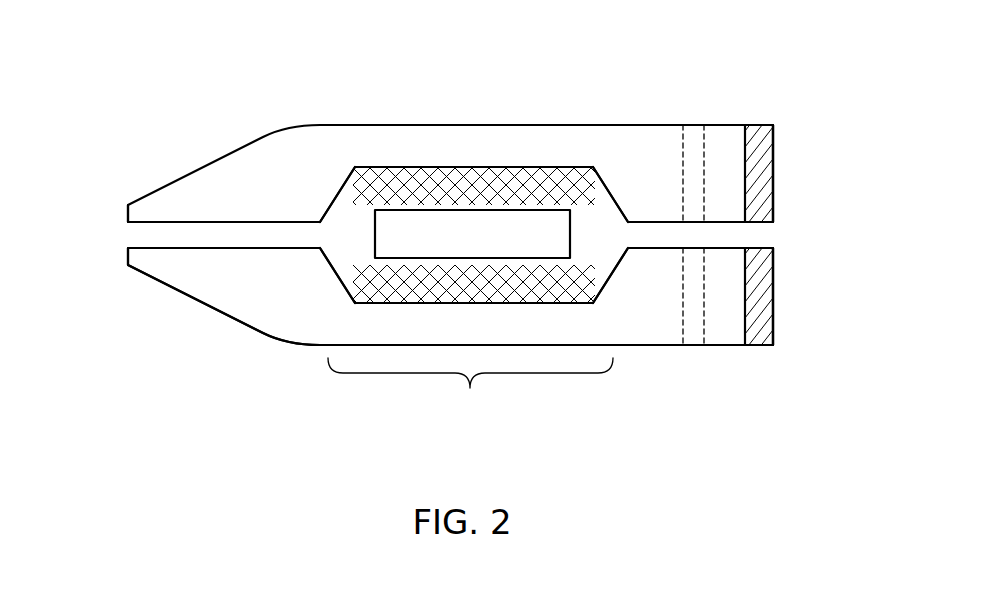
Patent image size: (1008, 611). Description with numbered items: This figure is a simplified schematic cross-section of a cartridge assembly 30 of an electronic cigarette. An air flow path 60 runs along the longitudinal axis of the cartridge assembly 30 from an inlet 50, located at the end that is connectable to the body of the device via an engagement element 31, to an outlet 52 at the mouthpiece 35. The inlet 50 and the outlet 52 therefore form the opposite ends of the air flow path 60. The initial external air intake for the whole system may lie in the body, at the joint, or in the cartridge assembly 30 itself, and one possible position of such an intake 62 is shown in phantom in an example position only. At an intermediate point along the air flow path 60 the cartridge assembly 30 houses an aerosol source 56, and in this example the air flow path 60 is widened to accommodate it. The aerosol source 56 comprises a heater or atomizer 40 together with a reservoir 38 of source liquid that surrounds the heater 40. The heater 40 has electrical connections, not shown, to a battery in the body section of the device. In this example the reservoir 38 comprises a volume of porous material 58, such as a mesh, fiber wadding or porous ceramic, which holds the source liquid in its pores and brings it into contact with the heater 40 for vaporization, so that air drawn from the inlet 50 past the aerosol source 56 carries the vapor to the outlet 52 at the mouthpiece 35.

The cartridge assembly 30 is at (314, 399).
The engagement element 31 is at (760, 132).
The mouthpiece 35 is at (182, 297).
The reservoir 38 is at (412, 188).
The heater 40 is at (458, 249).
The inlet 50 is at (768, 233).
The outlet 52 is at (130, 236).
The aerosol source 56 is at (470, 388).
The porous material 58 is at (532, 185).
The air flow path 60 is at (317, 235).
The air intake 62 is at (693, 125).